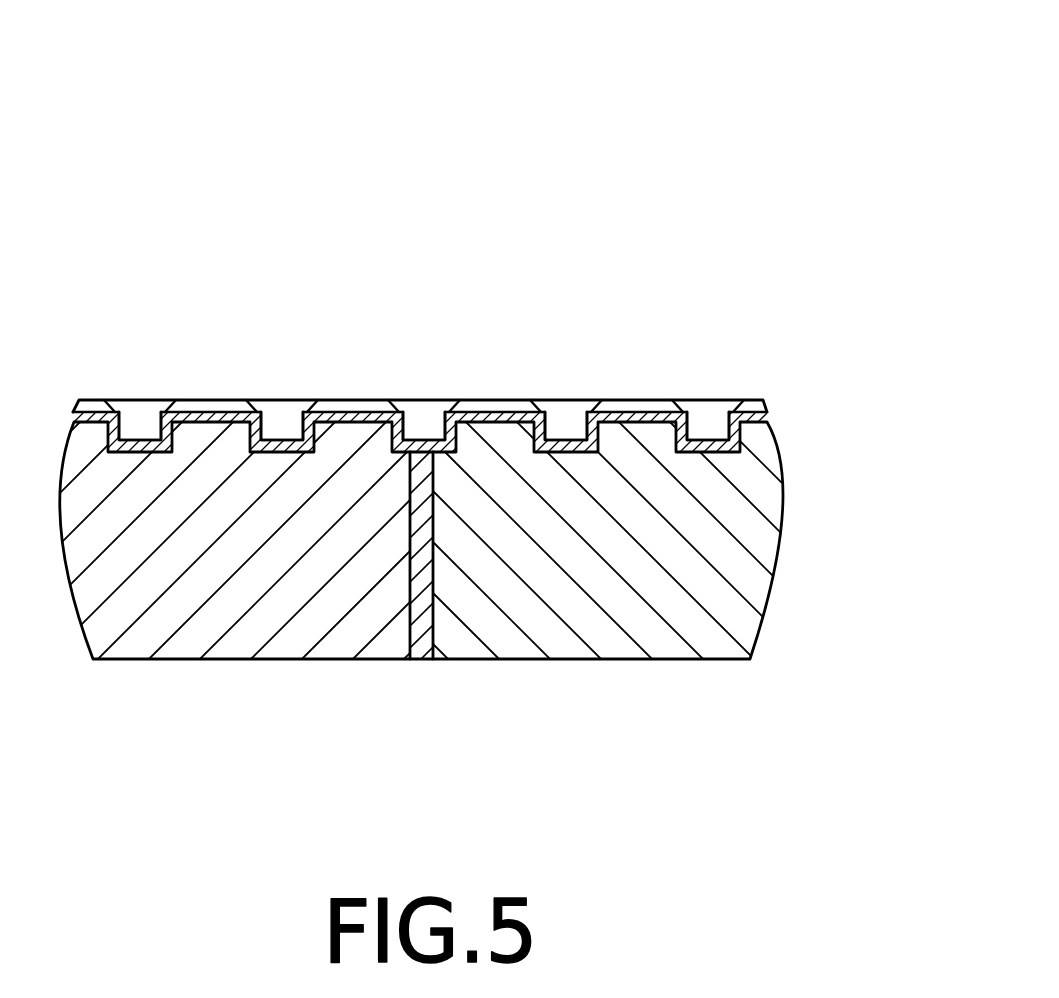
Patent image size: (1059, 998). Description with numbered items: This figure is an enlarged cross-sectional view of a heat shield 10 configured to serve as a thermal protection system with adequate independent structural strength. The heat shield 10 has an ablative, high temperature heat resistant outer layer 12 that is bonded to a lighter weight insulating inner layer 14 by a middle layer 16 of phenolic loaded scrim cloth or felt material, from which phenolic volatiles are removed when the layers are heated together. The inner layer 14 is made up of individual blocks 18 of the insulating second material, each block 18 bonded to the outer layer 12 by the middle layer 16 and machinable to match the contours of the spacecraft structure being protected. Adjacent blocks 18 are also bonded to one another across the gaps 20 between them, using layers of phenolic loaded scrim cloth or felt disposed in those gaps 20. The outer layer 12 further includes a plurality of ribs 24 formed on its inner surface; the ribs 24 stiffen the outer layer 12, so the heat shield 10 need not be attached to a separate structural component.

The heat shield 10 is at (792, 163).
The outer layer 12 is at (763, 401).
The inner layer 14 is at (812, 420).
The middle layer 16 is at (767, 413).
The blocks 18 is at (278, 659).
The gaps 20 is at (423, 659).
The ribs 24 is at (140, 416).